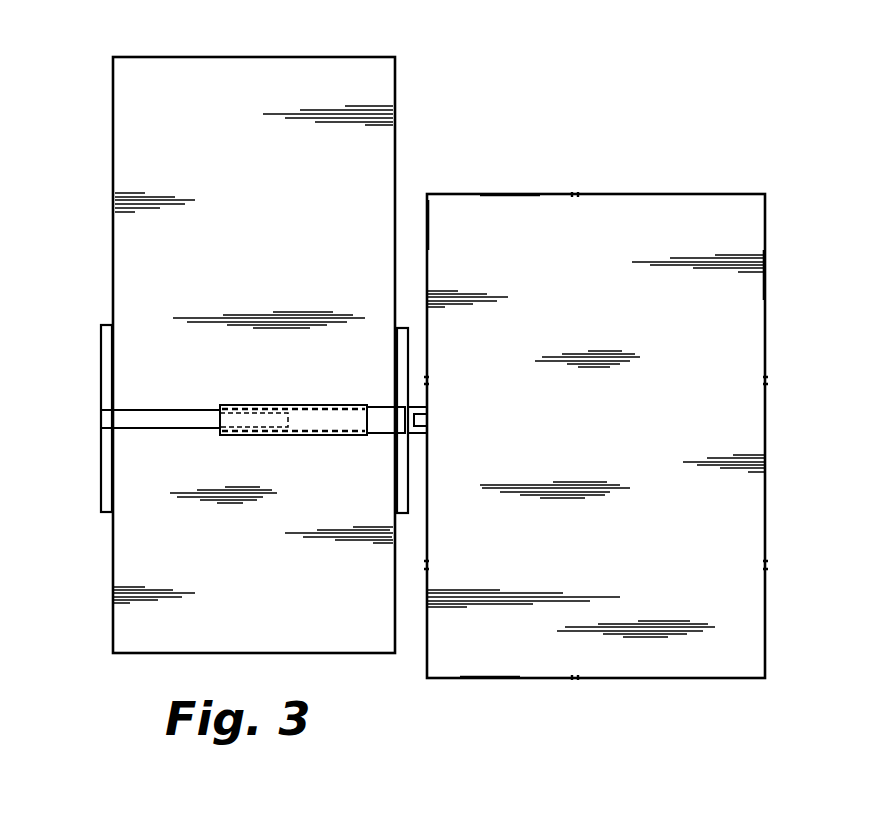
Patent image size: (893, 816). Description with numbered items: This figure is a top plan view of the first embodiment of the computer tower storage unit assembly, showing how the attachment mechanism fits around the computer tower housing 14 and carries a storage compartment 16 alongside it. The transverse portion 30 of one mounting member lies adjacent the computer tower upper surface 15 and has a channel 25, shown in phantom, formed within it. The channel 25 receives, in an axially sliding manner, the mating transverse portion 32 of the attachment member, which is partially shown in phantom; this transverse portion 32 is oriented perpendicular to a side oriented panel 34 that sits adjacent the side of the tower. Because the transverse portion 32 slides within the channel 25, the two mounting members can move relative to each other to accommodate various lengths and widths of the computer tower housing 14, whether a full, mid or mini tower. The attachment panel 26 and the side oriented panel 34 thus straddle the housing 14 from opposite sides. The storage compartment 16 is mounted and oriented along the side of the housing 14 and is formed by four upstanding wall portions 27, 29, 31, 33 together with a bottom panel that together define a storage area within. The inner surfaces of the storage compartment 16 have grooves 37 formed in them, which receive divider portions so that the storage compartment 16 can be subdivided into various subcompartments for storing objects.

The housing 14 is at (275, 57).
The computer tower upper surface 15 is at (190, 73).
The storage compartment 16 is at (645, 186).
The channel 25 is at (312, 405).
The attachment panel 26 is at (398, 330).
The upstanding wall portion 27 is at (427, 225).
The upstanding wall portion 29 is at (765, 270).
The transverse portion 30 is at (378, 405).
The upstanding wall portion 31 is at (483, 680).
The transverse portion 32 is at (170, 405).
The upstanding wall portion 33 is at (505, 192).
The side oriented panel 34 is at (105, 335).
The grooves 37 is at (766, 378).